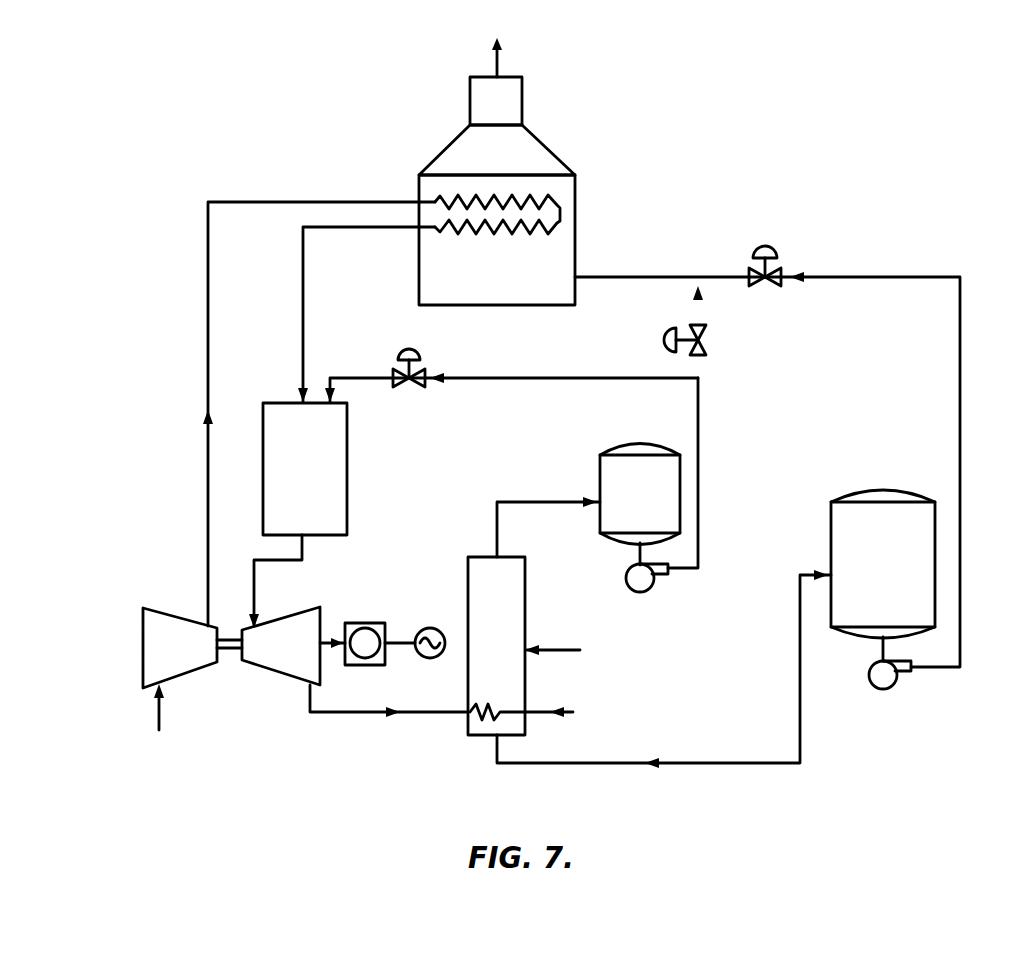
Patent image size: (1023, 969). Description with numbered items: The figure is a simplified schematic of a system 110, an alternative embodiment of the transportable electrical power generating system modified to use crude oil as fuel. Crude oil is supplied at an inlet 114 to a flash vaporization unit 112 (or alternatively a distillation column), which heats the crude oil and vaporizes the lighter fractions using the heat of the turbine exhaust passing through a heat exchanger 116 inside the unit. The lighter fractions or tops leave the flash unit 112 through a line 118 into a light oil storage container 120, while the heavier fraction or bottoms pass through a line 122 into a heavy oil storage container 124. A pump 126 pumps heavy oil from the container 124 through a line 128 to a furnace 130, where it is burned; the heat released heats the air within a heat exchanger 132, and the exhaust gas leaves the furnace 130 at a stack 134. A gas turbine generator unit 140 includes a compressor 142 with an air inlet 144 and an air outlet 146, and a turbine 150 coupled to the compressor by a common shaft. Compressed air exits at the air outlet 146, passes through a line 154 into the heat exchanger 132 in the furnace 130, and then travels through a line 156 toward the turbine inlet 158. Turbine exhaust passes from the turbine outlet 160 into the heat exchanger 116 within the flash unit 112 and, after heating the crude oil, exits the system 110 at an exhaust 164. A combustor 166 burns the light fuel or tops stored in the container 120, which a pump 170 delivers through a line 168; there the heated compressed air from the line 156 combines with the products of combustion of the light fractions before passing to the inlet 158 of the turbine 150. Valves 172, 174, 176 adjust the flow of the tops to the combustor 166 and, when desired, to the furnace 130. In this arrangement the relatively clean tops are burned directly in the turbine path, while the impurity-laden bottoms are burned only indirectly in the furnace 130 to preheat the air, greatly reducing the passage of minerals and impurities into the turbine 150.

The system 110 is at (96, 176).
The flash vaporization unit 112 is at (527, 563).
The inlet 114 is at (528, 648).
The heat exchanger 116 is at (471, 719).
The line 118 is at (539, 503).
The light oil storage container 120 is at (619, 443).
The line 122 is at (799, 653).
The heavy oil storage container 124 is at (903, 505).
The pump 126 is at (868, 674).
The line 128 is at (962, 326).
The furnace 130 is at (577, 223).
The heat exchanger 132 is at (520, 196).
The stack 134 is at (500, 82).
The gas turbine generator unit 140 is at (222, 692).
The compressor 142 is at (143, 648).
The air inlet 144 is at (152, 688).
The air outlet 146 is at (207, 621).
The turbine 150 is at (277, 675).
The line 154 is at (210, 298).
The line 156 is at (305, 298).
The turbine inlet 158 is at (258, 621).
The turbine outlet 160 is at (312, 688).
The exhaust 164 is at (540, 713).
The combustor 166 is at (348, 421).
The line 168 is at (677, 427).
The pump 170 is at (626, 578).
The valve 172 is at (425, 368).
The valve 174 is at (706, 348).
The valve 176 is at (779, 263).